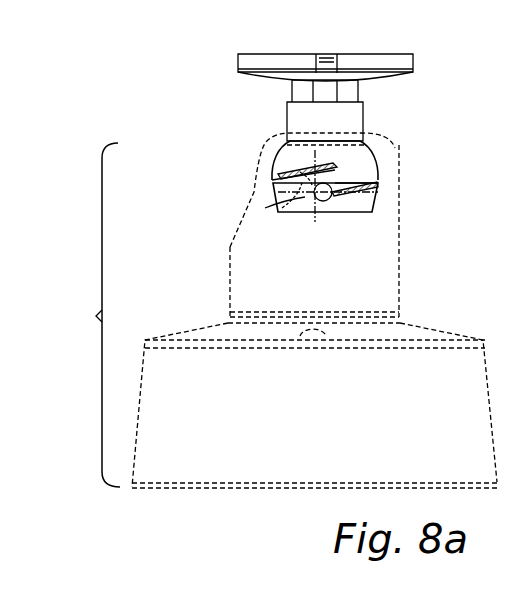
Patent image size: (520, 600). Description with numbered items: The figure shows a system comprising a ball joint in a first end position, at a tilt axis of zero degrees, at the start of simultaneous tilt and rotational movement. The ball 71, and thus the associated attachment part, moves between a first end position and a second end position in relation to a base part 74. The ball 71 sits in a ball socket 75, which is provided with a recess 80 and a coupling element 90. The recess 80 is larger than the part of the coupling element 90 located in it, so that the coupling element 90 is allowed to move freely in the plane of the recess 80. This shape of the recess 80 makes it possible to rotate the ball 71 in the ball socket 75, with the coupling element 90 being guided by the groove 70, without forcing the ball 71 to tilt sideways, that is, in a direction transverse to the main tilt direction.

The groove 70 is at (378, 186).
The ball 71 is at (296, 158).
The base part 74 is at (277, 310).
The ball socket 75 is at (228, 174).
The recess 80 is at (265, 208).
The coupling element 90 is at (333, 188).